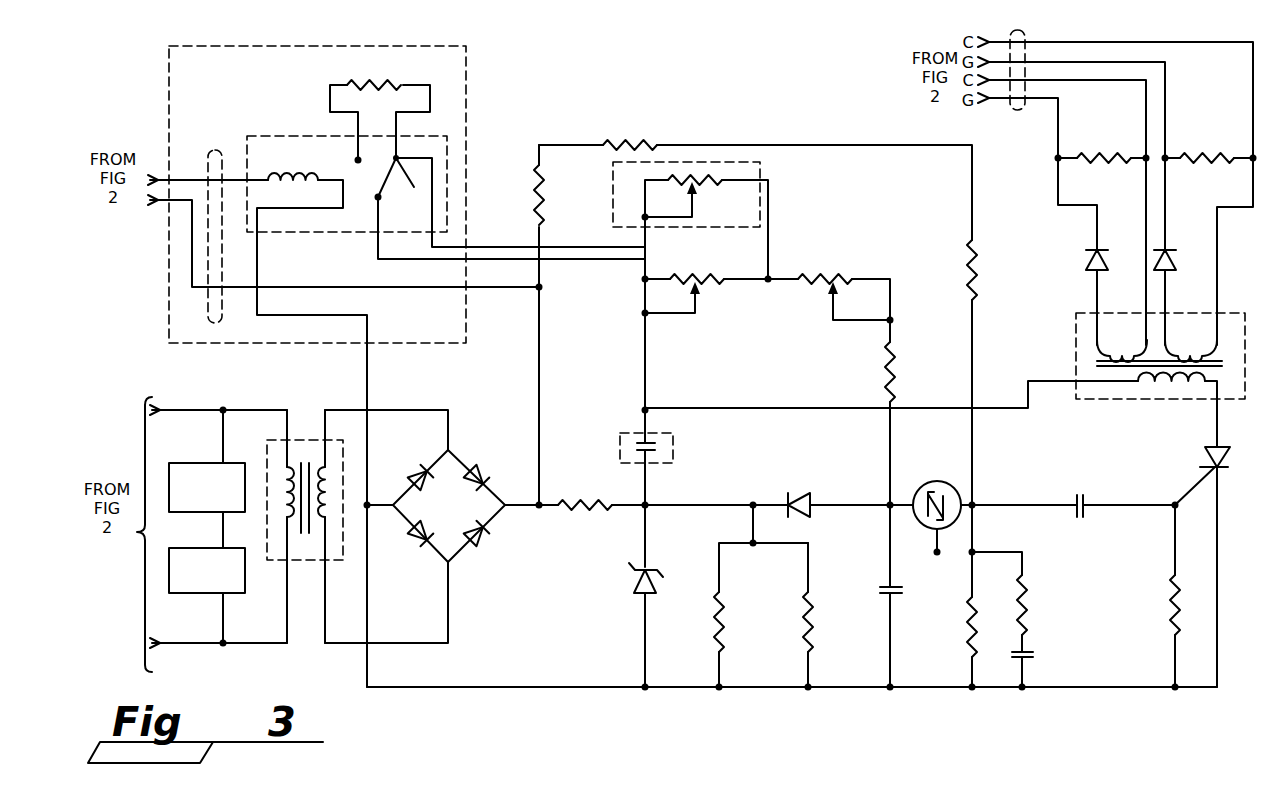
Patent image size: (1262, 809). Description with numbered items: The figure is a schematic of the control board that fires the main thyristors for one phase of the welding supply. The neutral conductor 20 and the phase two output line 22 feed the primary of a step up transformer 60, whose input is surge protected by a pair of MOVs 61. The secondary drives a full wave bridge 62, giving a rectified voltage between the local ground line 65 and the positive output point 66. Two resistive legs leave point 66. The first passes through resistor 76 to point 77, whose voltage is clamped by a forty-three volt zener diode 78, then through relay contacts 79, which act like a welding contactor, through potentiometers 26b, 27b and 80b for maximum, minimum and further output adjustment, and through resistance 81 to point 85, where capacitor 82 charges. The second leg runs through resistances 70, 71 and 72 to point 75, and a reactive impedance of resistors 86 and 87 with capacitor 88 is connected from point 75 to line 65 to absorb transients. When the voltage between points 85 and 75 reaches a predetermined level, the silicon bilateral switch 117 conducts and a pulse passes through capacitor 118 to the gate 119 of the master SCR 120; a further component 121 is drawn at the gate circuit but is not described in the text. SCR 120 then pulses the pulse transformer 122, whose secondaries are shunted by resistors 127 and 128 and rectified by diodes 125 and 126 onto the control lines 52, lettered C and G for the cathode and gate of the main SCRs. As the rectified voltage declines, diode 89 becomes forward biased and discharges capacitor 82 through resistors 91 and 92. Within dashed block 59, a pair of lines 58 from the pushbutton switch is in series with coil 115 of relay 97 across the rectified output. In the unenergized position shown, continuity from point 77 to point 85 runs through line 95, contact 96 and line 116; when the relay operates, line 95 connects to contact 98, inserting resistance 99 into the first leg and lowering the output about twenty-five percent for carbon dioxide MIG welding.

The neutral conductor 20 is at (205, 645).
The phase 2 output line 22 is at (197, 409).
The potentiometer 26b is at (822, 276).
The potentiometer 27b is at (690, 276).
The control lines 52 is at (1028, 110).
The pair of lines 58 is at (218, 148).
The dashed block 59 is at (471, 74).
The step up transformer 60 is at (305, 561).
The surge suppressing MOVs 61 is at (197, 514).
The full wave bridge 62 is at (484, 446).
The local ground line 65 is at (552, 686).
The positive output point 66 is at (539, 511).
The resistance 70 is at (536, 181).
The resistance 71 is at (628, 143).
The resistance 72 is at (969, 257).
The point 75 is at (975, 502).
The resistor 76 is at (598, 495).
The point 77 is at (650, 503).
The zener diode 78 is at (636, 590).
The relay contacts 79 is at (674, 452).
The potentiometer 80b is at (612, 199).
The resistance 81 is at (893, 366).
The capacitor 82 is at (883, 585).
The point 85 is at (888, 502).
The resistor 86 is at (968, 619).
The resistor 87 is at (1026, 598).
The capacitor 88 is at (1030, 650).
The diode 89 is at (805, 490).
The resistor 91 is at (806, 625).
The resistor 92 is at (722, 618).
The line 95 is at (587, 261).
The relay contact 96 is at (510, 207).
The relay 97 is at (292, 136).
The relay contact 98 is at (356, 161).
The resistance 99 is at (355, 83).
The coil 115 is at (297, 172).
The line 116 is at (592, 246).
The silicon bilateral switch 117 is at (940, 480).
The capacitor 118 is at (1083, 493).
The gate 119 is at (1190, 492).
The master SCR 120 is at (1230, 460).
The resistor 121 is at (1172, 576).
The pulse transformer 122 is at (1075, 330).
The diode 125 is at (1086, 265).
The diode 126 is at (1176, 259).
The resistor 127 is at (1099, 155).
The resistor 128 is at (1206, 155).